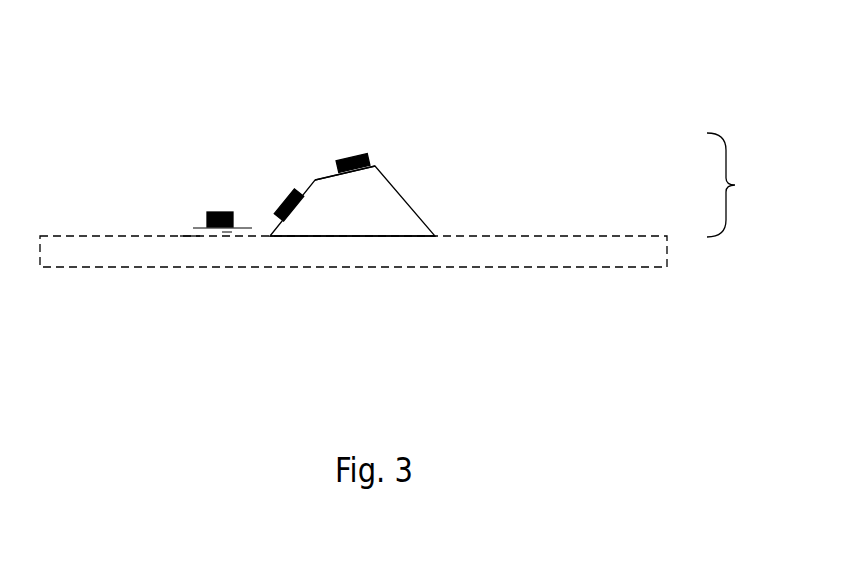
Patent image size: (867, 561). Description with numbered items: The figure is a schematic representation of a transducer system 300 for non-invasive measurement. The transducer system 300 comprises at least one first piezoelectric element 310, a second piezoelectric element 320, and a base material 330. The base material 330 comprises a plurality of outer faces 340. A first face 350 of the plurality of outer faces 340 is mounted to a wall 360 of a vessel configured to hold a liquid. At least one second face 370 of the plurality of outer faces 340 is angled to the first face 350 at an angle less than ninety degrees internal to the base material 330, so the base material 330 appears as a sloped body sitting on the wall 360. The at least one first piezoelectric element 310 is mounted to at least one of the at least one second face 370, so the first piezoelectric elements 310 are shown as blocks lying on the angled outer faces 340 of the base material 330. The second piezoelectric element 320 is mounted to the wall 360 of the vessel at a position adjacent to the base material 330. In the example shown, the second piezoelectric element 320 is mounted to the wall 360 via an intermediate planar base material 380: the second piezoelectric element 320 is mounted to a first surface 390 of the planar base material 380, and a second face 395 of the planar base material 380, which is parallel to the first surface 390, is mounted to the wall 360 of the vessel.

The transducer system 300 is at (741, 185).
The first piezoelectric element 310 is at (314, 135).
The second piezoelectric element 320 is at (185, 171).
The base material 330 is at (391, 122).
The outer faces 340 is at (387, 195).
The first face 350 is at (352, 306).
The wall 360 is at (353, 294).
The second face 370 is at (387, 118).
The intermediate planar base material 380 is at (202, 295).
The first surface 390 is at (162, 188).
The second face 395 is at (149, 295).